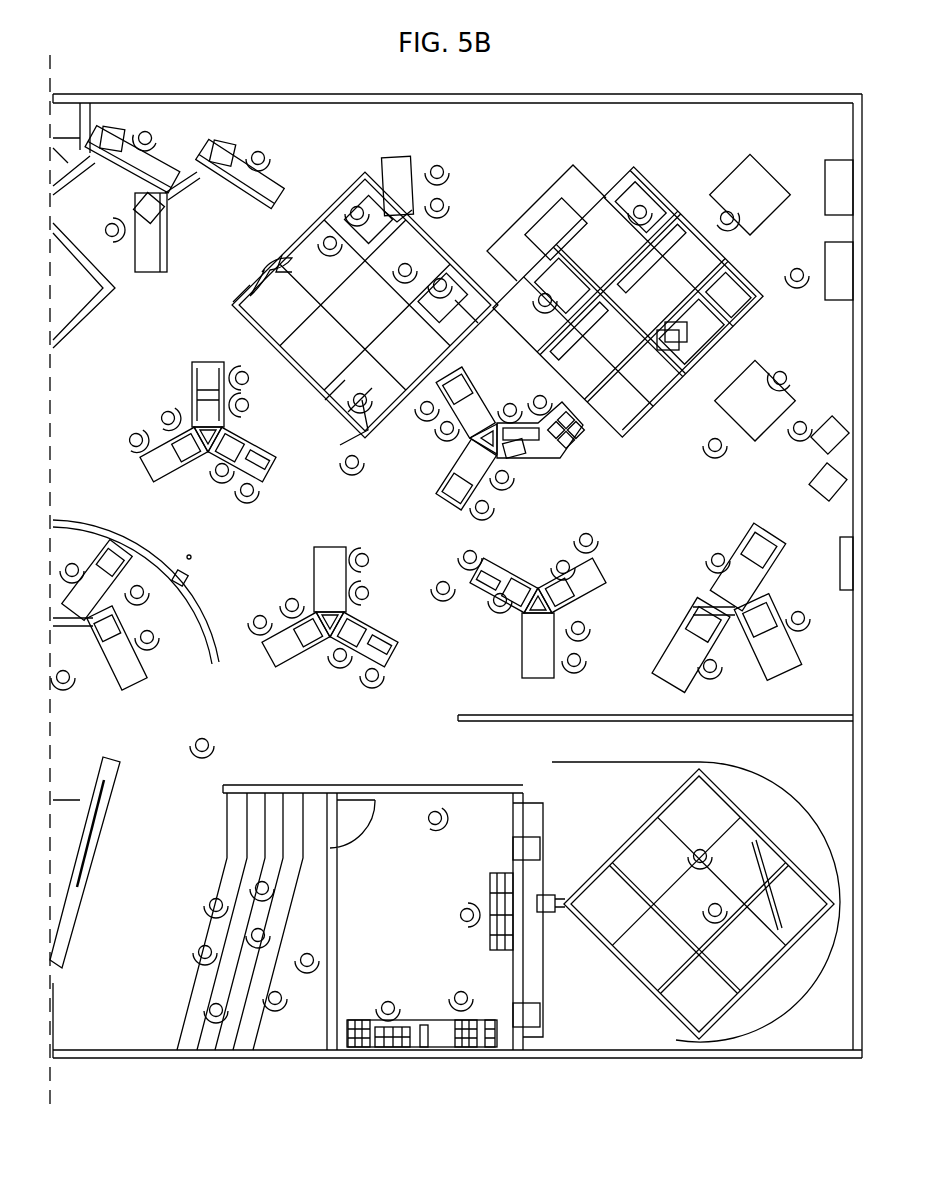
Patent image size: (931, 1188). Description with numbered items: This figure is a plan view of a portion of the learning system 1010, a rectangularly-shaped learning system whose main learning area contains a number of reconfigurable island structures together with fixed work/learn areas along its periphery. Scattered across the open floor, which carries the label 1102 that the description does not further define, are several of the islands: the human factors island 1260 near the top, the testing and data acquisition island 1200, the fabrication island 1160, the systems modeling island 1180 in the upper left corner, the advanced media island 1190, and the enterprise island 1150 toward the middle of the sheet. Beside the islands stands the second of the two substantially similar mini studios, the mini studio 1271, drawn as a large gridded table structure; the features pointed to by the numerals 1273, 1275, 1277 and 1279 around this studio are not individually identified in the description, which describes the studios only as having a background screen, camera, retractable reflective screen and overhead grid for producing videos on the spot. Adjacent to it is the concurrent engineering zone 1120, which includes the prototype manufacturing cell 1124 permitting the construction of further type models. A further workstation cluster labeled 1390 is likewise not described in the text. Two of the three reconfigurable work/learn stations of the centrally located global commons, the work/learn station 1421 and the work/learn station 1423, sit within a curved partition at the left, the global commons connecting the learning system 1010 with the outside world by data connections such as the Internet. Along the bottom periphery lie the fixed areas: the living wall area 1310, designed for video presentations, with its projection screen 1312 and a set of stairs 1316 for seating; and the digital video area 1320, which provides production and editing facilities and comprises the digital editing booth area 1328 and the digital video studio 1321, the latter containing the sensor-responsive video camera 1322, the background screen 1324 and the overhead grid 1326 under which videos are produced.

The learning system 1010 is at (184, 1068).
The open office area 1102 is at (273, 554).
The concurrent engineering zone 1120 is at (661, 166).
The prototype manufacturing cell 1124 is at (537, 186).
The enterprise island 1150 is at (512, 648).
The fabrication island 1160 is at (518, 466).
The systems modeling island 1180 is at (262, 148).
The advanced media island 1190 is at (305, 672).
The testing and data acquisition island 1200 is at (207, 356).
The human factors island 1260 is at (400, 154).
The mini studio 1271 is at (395, 430).
The table 1273 is at (466, 336).
The table edge 1275 is at (330, 406).
The chair 1277 is at (268, 266).
The table edge 1279 is at (238, 298).
The living wall area 1310 is at (165, 850).
The projection screen 1312 is at (87, 880).
The set of stairs 1316 is at (205, 988).
The digital video area 1320 is at (515, 1070).
The digital video studio 1321 is at (811, 808).
The sensor-responsive video camera 1322 is at (558, 893).
The background screen 1324 is at (787, 918).
The overhead grid 1326 is at (640, 978).
The digital editing booth area 1328 is at (400, 815).
The workstation 1390 is at (731, 530).
The reconfigurable work/learn station 1421 is at (115, 540).
The reconfigurable work/learn station 1423 is at (135, 685).